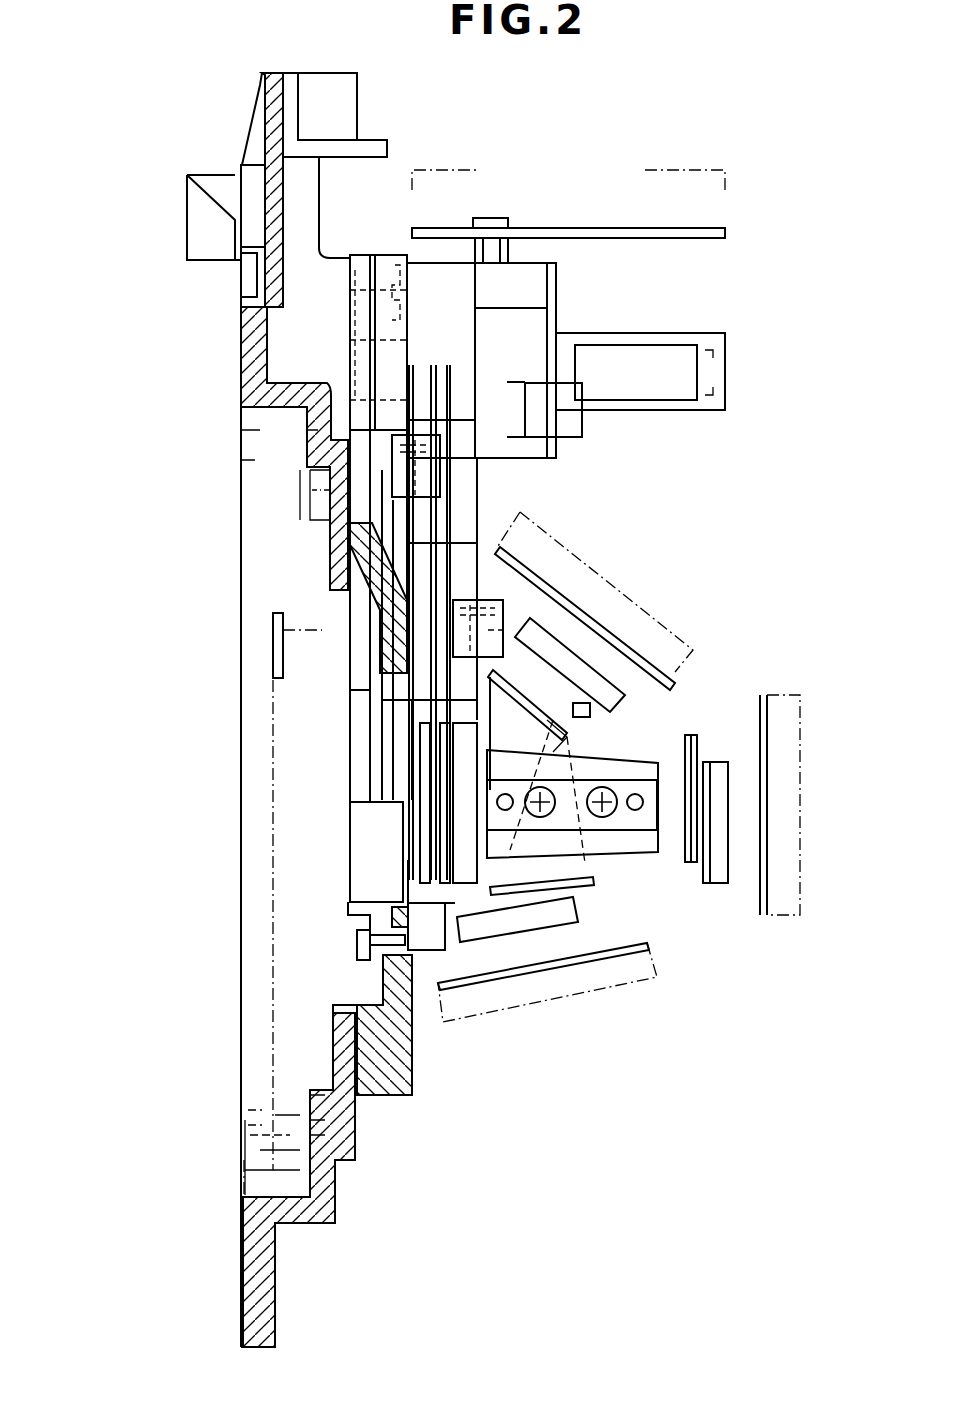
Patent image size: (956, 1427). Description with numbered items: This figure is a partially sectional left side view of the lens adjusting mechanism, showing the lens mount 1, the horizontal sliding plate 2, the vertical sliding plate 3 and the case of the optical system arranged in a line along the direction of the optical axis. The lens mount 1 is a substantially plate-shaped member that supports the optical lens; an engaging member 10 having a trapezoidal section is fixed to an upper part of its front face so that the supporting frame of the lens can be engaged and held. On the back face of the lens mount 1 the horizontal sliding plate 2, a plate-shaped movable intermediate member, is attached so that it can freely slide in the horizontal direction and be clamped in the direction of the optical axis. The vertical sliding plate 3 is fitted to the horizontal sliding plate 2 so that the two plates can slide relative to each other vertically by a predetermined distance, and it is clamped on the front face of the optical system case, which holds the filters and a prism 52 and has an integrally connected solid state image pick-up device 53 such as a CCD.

The lens mount 1 is at (240, 380).
The engaging member 10 is at (187, 204).
The horizontal sliding plate 2 is at (365, 258).
The vertical sliding plate 3 is at (412, 1047).
The prism 52 is at (585, 860).
The solid state image pick-up device 53 is at (713, 757).